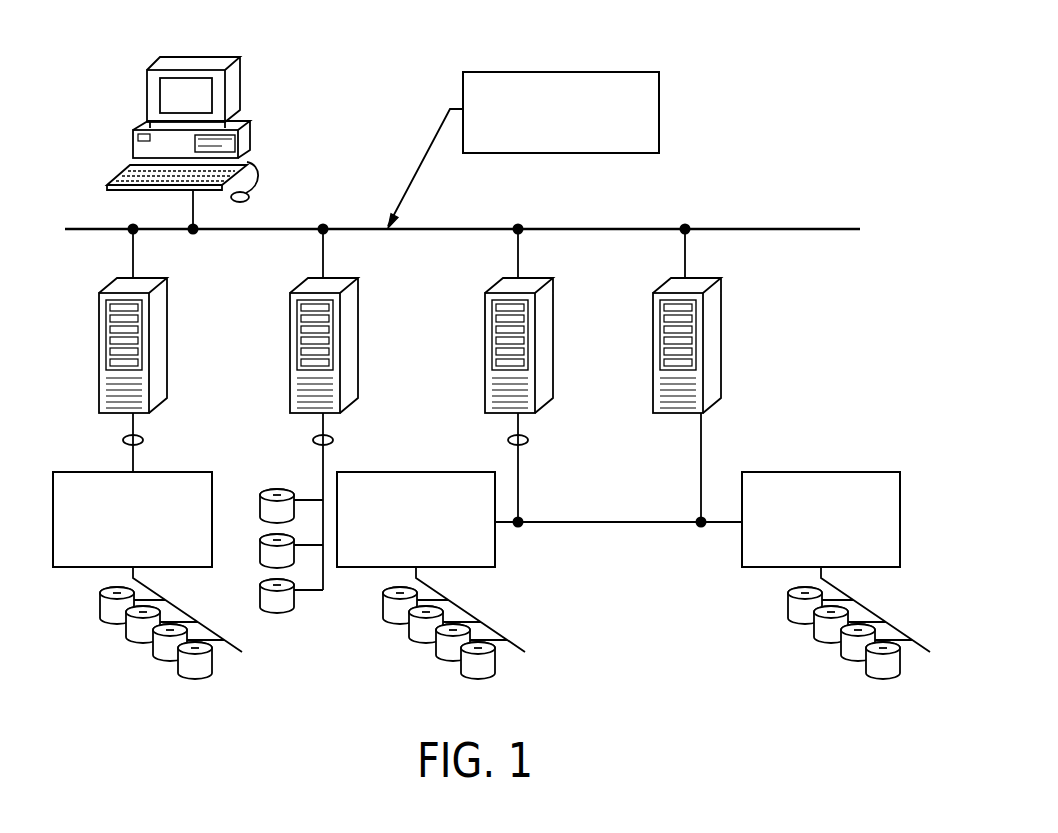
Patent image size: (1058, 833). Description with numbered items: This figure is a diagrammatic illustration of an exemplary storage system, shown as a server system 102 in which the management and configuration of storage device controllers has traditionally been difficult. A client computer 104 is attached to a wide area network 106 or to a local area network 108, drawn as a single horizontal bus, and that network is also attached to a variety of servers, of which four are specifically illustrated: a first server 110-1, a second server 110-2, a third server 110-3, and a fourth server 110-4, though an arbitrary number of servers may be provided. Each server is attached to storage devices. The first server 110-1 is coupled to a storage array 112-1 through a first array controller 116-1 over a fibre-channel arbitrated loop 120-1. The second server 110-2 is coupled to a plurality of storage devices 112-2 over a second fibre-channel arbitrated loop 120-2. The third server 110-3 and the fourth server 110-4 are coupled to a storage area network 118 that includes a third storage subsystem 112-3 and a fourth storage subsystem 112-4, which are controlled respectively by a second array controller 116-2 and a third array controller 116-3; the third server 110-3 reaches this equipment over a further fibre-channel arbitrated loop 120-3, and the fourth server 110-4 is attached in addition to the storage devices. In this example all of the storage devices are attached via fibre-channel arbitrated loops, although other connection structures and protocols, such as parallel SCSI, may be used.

The server system 102 is at (722, 86).
The client computer 104 is at (242, 130).
The wide area network 106 is at (462, 208).
The local area network 108 is at (280, 228).
The first server 110-1 is at (167, 340).
The second server 110-2 is at (357, 352).
The third server 110-3 is at (552, 355).
The fourth server 110-4 is at (719, 360).
The storage array 112-1 is at (143, 641).
The storage devices 112-2 is at (280, 608).
The third storage subsystem 112-3 is at (426, 643).
The fourth storage subsystem 112-4 is at (831, 641).
The first array controller 116-1 is at (188, 450).
The second array controller 116-2 is at (378, 449).
The third array controller 116-3 is at (812, 449).
The storage area network 118 is at (594, 521).
The fibre-channel arbitrated loop 120-1 is at (123, 440).
The second fibre-channel arbitrated loop 120-2 is at (313, 440).
The fibre-channel arbitrated loop 120-3 is at (508, 440).